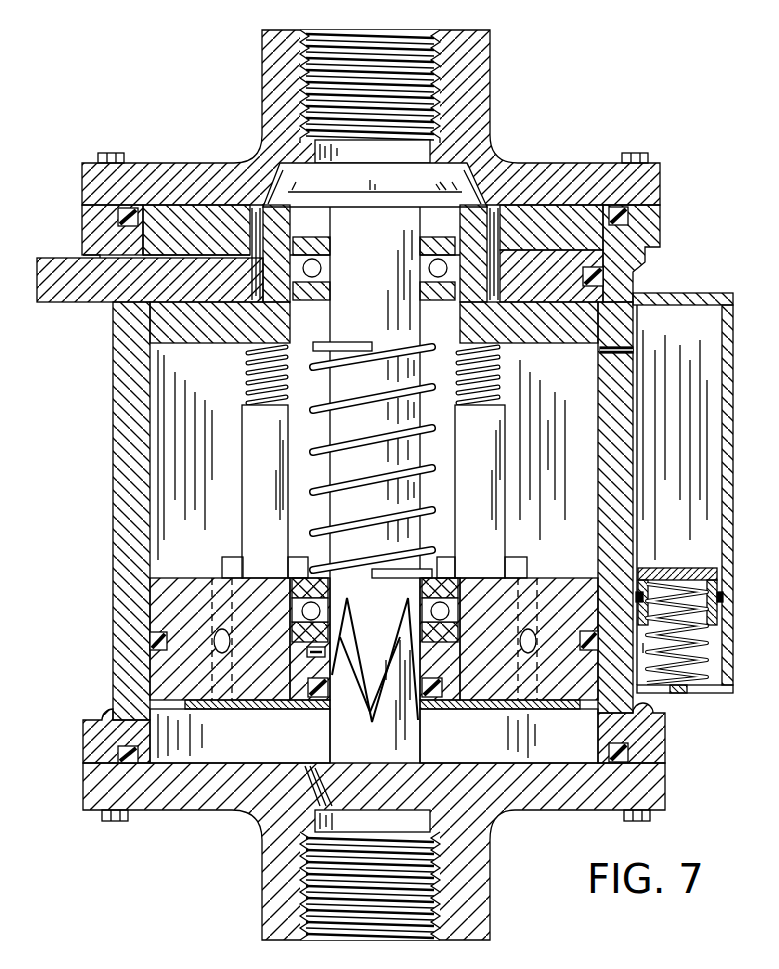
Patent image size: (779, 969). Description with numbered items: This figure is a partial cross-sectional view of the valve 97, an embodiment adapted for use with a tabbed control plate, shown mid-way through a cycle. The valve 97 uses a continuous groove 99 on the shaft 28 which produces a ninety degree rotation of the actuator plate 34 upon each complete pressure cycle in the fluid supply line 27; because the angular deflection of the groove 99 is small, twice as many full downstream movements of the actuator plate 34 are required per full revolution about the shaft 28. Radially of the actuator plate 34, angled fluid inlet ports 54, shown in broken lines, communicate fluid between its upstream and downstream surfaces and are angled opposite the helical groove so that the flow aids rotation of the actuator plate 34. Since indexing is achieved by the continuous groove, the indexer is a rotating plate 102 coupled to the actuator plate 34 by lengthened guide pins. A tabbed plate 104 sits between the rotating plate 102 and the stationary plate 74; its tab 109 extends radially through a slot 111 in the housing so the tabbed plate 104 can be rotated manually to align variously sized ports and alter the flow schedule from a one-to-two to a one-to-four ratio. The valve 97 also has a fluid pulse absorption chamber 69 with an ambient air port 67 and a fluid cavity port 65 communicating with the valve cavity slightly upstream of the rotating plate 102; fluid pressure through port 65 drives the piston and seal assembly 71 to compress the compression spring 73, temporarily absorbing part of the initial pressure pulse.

The fluid supply line 27 is at (302, 920).
The shaft 28 is at (348, 550).
The actuator plate 34 is at (550, 690).
The angled fluid inlet ports 54 is at (152, 645).
The fluid cavity port 65 is at (673, 293).
The ambient air port 67 is at (680, 688).
The fluid pulse absorption chamber 69 is at (697, 298).
The piston and seal assembly 71 is at (667, 568).
The compression spring 73 is at (707, 650).
The stationary plate 74 is at (587, 228).
The valve 97 is at (325, 511).
The continuous groove 99 is at (373, 713).
The rotating plate 102 is at (620, 348).
The tabbed plate 104 is at (205, 272).
The tab 109 is at (42, 290).
The slot 111 is at (113, 305).